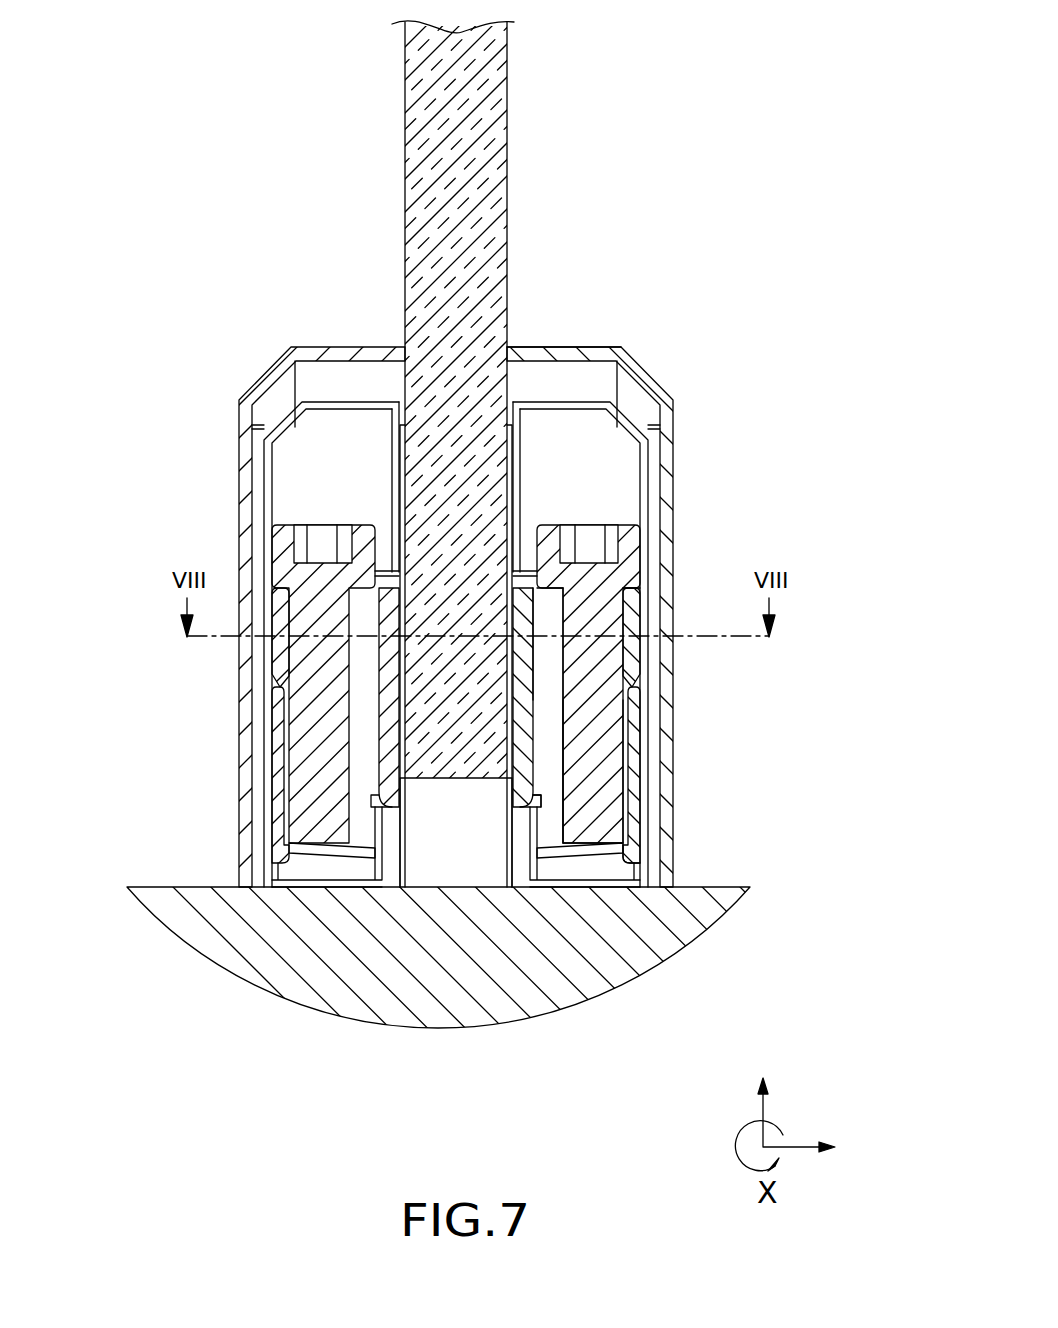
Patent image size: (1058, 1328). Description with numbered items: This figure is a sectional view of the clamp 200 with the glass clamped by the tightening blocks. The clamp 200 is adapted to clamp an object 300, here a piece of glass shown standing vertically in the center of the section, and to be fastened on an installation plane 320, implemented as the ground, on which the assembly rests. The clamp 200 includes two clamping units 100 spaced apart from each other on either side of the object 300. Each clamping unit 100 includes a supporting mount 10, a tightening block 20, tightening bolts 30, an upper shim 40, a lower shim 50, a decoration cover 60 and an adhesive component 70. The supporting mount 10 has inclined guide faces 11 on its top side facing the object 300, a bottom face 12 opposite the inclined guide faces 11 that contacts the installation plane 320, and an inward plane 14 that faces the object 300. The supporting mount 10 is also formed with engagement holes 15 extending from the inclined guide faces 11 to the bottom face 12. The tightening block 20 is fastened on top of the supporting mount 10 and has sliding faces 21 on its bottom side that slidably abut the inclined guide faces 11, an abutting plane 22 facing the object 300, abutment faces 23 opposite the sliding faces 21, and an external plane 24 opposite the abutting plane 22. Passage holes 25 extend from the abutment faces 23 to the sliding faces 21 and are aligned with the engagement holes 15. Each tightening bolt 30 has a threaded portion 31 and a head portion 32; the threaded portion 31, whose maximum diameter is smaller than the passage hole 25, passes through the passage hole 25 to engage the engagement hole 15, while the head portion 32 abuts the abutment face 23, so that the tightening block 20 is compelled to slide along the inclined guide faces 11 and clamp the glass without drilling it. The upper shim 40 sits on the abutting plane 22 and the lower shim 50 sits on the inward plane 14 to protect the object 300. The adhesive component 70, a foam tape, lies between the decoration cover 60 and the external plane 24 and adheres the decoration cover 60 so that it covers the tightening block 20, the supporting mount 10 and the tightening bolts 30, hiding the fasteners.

The clamp 200 is at (636, 120).
The clamping unit 100 is at (253, 345).
The object 300 is at (427, 93).
The installation plane 320 is at (167, 886).
The supporting mount 10 is at (649, 750).
The inclined guide face 11 is at (600, 672).
The bottom face 12 is at (620, 845).
The inward plane 14 is at (548, 856).
The engagement hole 15 is at (600, 798).
The tightening block 20 is at (646, 604).
The sliding face 21 is at (600, 672).
The abutting plane 22 is at (520, 623).
The abutment face 23 is at (630, 580).
The external plane 24 is at (628, 440).
The passage hole 25 is at (545, 603).
The tightening bolt 30 is at (636, 530).
The threaded portion 31 is at (603, 722).
The head portion 32 is at (593, 771).
The upper shim 40 is at (487, 779).
The lower shim 50 is at (494, 887).
The decoration cover 60 is at (528, 352).
The adhesive component 70 is at (650, 458).